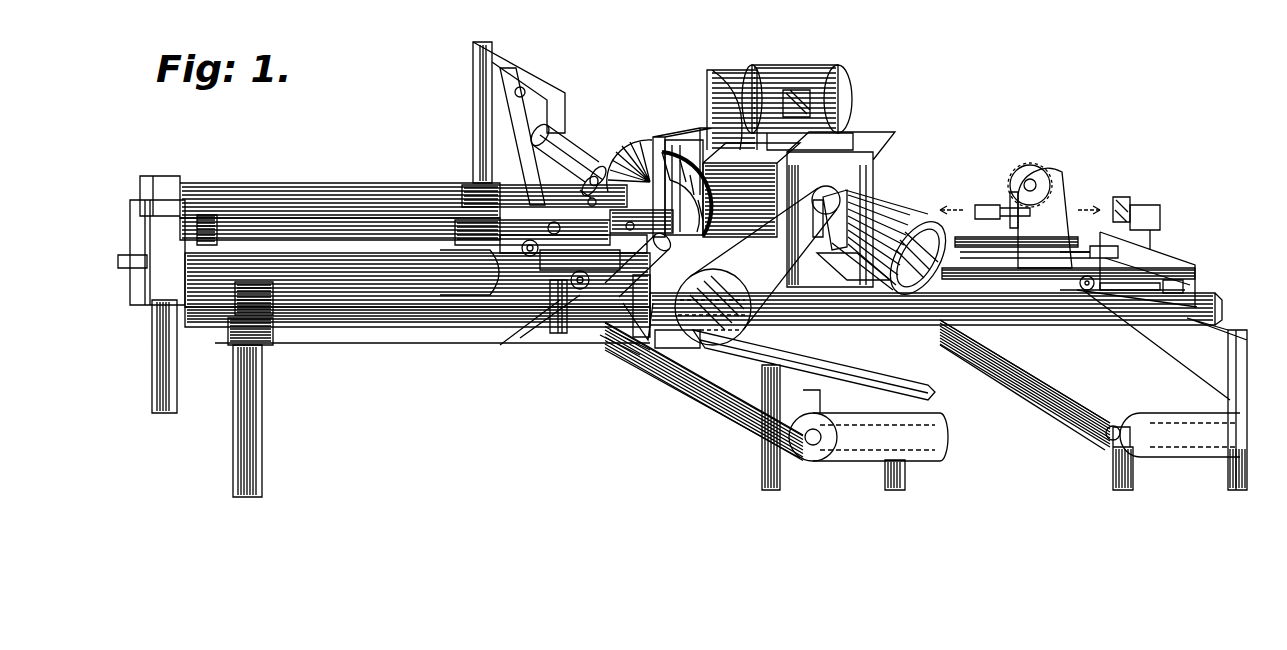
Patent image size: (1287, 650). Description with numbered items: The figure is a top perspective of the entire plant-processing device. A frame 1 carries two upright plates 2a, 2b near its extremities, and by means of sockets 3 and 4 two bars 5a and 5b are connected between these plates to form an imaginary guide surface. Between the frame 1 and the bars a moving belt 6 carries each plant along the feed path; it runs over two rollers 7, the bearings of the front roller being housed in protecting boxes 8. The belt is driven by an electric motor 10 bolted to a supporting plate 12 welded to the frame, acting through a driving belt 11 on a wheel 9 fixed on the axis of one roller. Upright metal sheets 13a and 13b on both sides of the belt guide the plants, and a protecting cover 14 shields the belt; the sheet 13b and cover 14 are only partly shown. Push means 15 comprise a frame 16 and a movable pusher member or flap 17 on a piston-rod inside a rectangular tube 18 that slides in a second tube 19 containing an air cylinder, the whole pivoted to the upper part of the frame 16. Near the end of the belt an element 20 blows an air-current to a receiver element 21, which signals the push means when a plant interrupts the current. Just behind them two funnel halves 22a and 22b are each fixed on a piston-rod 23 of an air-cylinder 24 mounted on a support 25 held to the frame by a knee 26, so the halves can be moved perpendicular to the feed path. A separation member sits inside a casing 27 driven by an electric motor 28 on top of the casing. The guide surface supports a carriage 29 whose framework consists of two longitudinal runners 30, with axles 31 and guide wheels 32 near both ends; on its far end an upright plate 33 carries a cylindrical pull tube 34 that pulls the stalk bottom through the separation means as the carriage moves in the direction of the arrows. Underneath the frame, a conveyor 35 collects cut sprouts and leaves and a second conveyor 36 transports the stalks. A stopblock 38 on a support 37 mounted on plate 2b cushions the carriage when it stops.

The frame 1 is at (357, 327).
The upright plate 2a is at (133, 243).
The upright plate 2b is at (1140, 262).
The socket 3 is at (1122, 262).
The socket 4 is at (1182, 290).
The bar 5a is at (1090, 247).
The bar 5b is at (1122, 285).
The moving belt 6 is at (313, 348).
The roller 7 is at (665, 345).
The protecting box 8 is at (276, 299).
The wheel 9 is at (697, 345).
The electric motor 10 is at (873, 195).
The driving belt 11 is at (762, 228).
The supporting plate 12 is at (878, 302).
The upright metal sheet 13a is at (318, 183).
The upright metal sheet 13b is at (355, 222).
The protecting cover 14 is at (412, 292).
The push means 15 is at (540, 59).
The frame 16 is at (473, 102).
The pusher member or flap 17 is at (497, 200).
The tube 18 is at (513, 177).
The second tube 19 is at (533, 108).
The element blowing out an air-current 20 is at (656, 160).
The receiver element 21 is at (595, 165).
The half funnel 22a is at (678, 150).
The half funnel 22b is at (690, 170).
The piston-rod 23 is at (635, 143).
The air-cylinder 24 is at (565, 150).
The support 25 is at (630, 305).
The knee 26 is at (633, 340).
The casing 27 is at (725, 178).
The electric motor 28 is at (836, 88).
The carriage 29 is at (1054, 151).
The longitudinal runner 30 is at (965, 232).
The axle 31 is at (523, 317).
The guide wheel 32 is at (560, 307).
The upright plate 33 is at (1047, 188).
The tube 34 is at (990, 205).
The conveyor 35 is at (854, 455).
The conveyor 36 is at (1180, 458).
The support 37 is at (1150, 207).
The stopblock 38 is at (1122, 197).